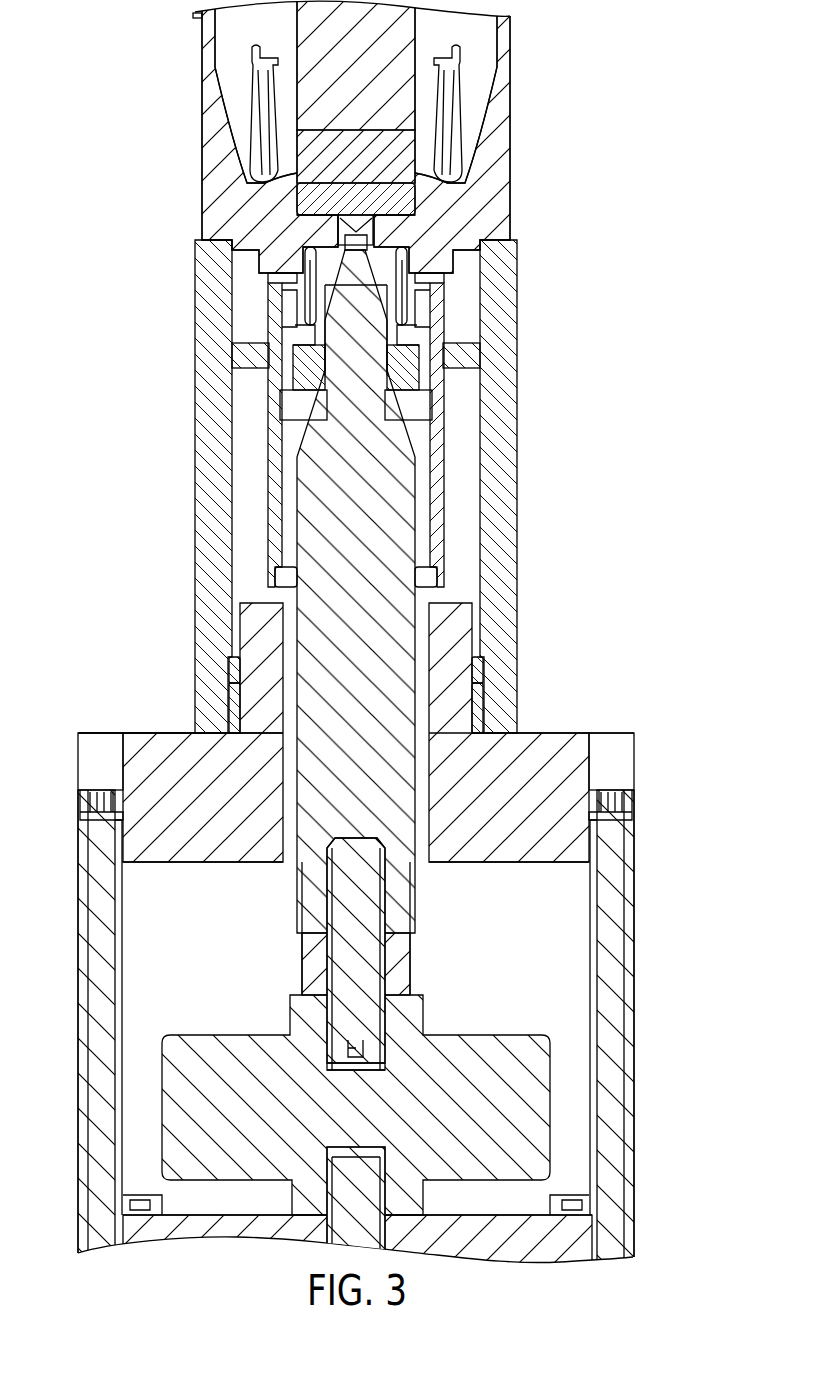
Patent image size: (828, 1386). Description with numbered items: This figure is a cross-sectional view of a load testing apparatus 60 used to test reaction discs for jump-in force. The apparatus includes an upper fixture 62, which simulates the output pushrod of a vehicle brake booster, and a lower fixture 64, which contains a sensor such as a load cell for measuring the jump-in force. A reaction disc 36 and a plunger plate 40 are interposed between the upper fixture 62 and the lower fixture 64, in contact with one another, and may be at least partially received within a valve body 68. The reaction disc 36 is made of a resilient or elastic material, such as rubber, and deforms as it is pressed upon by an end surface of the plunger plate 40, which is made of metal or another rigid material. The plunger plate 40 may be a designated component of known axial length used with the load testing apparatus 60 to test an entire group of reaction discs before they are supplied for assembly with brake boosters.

The load testing apparatus 60 is at (620, 176).
The upper fixture 62 is at (295, 68).
The reaction disc 36 is at (290, 200).
The plunger plate 40 is at (356, 230).
The valve body 68 is at (263, 385).
The lower fixture 64 is at (330, 502).